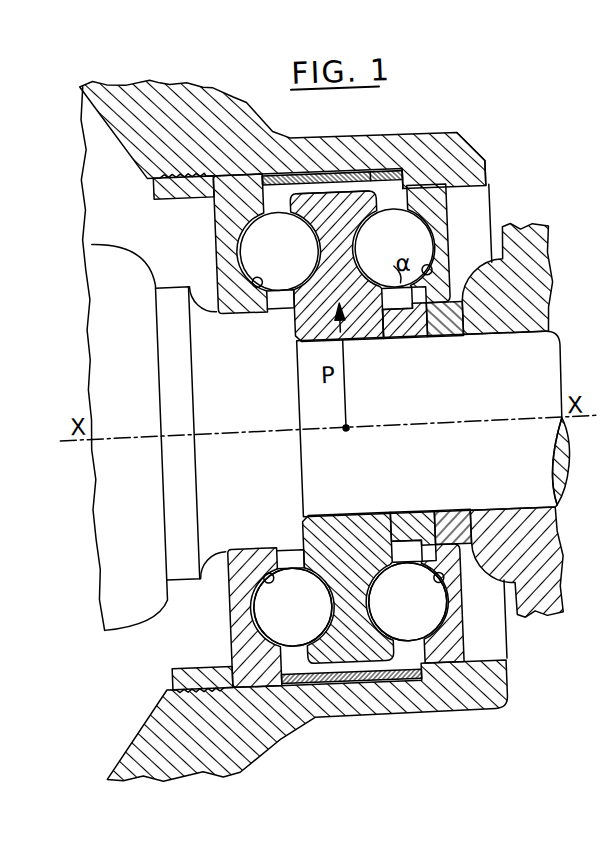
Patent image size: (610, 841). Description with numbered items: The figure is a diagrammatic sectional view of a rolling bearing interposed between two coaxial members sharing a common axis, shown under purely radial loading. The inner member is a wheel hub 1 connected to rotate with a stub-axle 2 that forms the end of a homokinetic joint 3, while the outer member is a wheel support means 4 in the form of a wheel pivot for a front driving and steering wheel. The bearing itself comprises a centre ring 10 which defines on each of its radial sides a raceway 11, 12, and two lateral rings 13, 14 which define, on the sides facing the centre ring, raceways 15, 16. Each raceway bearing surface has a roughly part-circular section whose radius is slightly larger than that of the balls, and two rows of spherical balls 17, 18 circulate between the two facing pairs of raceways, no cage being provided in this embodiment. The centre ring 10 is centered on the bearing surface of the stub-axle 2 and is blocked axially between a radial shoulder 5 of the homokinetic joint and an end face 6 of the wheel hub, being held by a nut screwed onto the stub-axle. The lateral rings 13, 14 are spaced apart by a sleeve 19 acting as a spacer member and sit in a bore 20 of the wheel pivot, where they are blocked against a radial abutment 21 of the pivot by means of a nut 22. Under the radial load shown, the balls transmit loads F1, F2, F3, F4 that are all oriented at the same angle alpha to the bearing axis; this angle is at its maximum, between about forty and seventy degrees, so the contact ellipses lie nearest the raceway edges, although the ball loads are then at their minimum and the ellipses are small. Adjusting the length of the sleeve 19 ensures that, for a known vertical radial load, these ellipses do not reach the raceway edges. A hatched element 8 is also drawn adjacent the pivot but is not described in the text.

The wheel hub 1 is at (528, 257).
The stub-axle 2 is at (541, 372).
The homokinetic joint 3 is at (118, 269).
The wheel support means 4 is at (217, 113).
The radial shoulder 5 is at (337, 266).
The end face 6 is at (370, 332).
The outer ring 8 is at (444, 174).
The centre ring 10 is at (339, 208).
The raceway 11 is at (286, 174).
The raceway 12 is at (391, 179).
The lateral ring 13 is at (229, 232).
The lateral ring 14 is at (460, 226).
The raceway 15 is at (261, 286).
The raceway 16 is at (432, 334).
The spherical balls 17 is at (292, 282).
The spherical balls 18 is at (406, 333).
The sleeve 19 is at (367, 173).
The bore 20 is at (434, 176).
The radial abutment 21 is at (450, 174).
The nut 22 is at (161, 179).
The load F1 is at (431, 215).
The load F2 is at (255, 216).
The load F3 is at (432, 571).
The load F4 is at (254, 569).